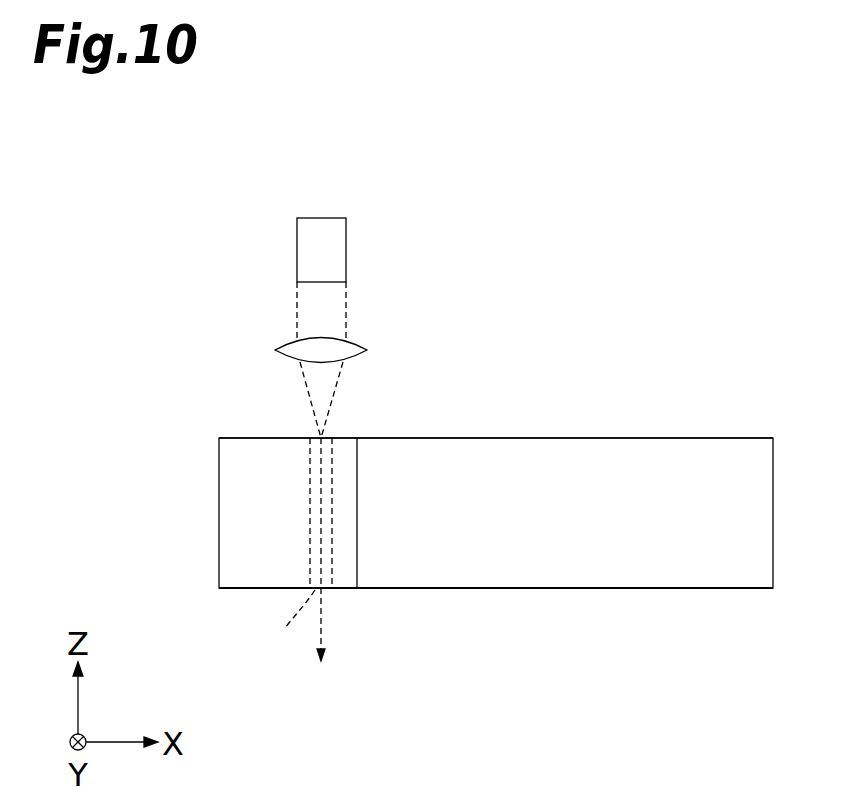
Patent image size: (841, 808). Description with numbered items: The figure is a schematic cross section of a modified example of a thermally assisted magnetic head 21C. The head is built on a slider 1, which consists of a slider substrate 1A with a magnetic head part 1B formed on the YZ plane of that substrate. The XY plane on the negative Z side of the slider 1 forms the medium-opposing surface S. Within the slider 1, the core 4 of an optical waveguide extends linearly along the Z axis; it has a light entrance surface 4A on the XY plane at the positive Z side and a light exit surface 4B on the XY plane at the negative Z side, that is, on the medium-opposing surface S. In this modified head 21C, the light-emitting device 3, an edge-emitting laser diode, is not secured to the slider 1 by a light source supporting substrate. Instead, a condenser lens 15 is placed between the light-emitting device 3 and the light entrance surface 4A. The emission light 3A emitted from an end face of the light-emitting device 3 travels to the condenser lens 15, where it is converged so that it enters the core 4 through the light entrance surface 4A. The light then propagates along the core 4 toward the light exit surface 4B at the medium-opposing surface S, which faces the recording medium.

The slider 1 is at (498, 684).
The slider substrate 1A is at (465, 545).
The magnetic head part 1B is at (343, 575).
The medium-opposing surface S is at (692, 588).
The light-emitting device 3 is at (325, 228).
The emission light 3A is at (346, 313).
The condenser lens 15 is at (352, 355).
The core 4 is at (308, 502).
The light entrance surface 4A is at (315, 432).
The light exit surface 4B is at (289, 628).
The thermally assisted magnetic head 21C is at (652, 187).